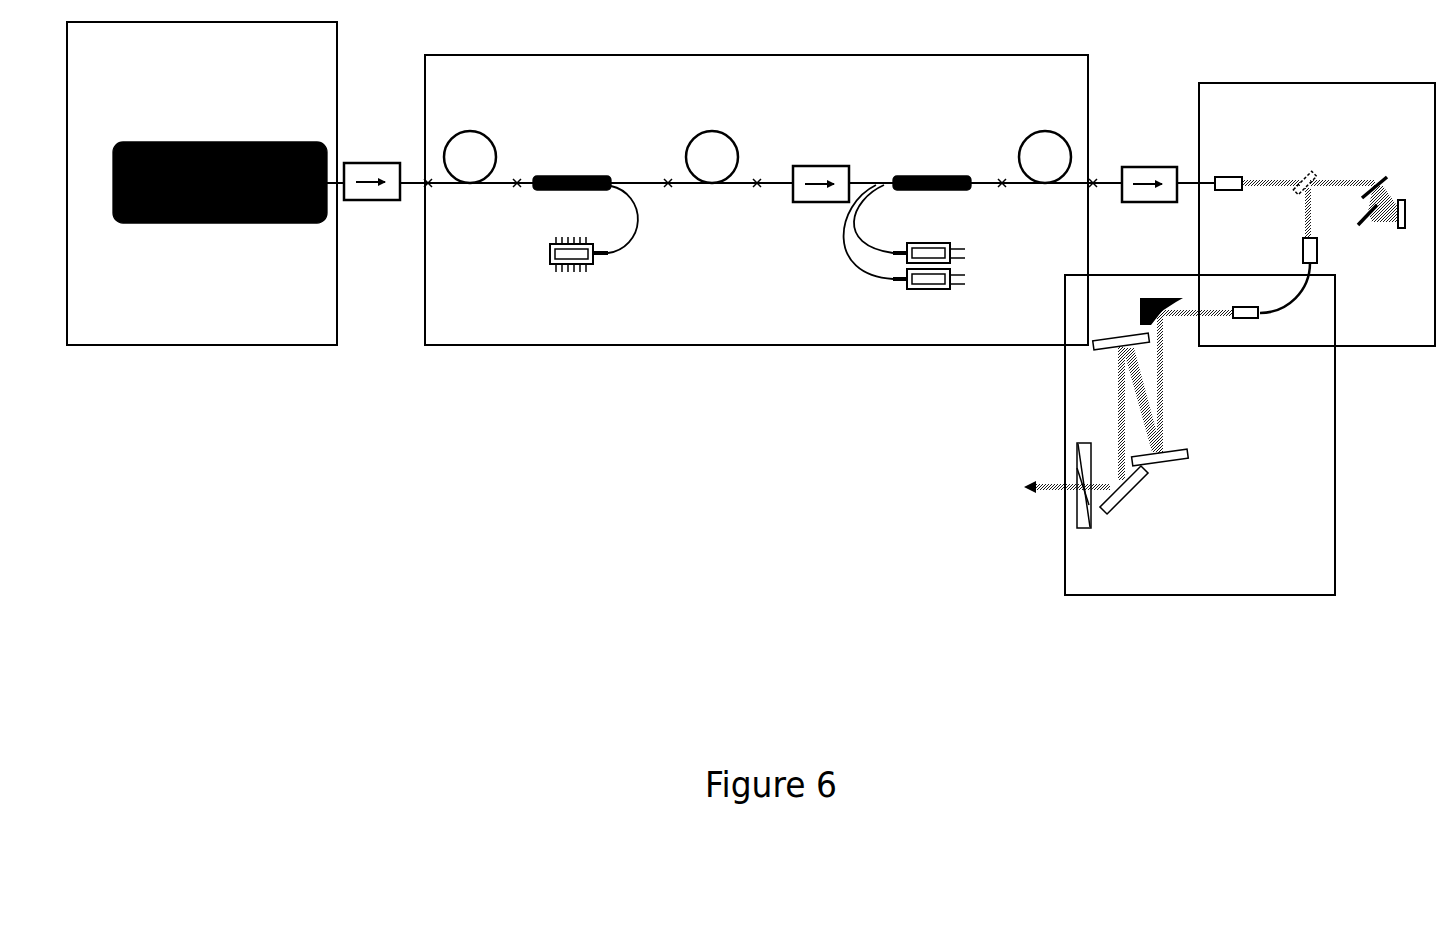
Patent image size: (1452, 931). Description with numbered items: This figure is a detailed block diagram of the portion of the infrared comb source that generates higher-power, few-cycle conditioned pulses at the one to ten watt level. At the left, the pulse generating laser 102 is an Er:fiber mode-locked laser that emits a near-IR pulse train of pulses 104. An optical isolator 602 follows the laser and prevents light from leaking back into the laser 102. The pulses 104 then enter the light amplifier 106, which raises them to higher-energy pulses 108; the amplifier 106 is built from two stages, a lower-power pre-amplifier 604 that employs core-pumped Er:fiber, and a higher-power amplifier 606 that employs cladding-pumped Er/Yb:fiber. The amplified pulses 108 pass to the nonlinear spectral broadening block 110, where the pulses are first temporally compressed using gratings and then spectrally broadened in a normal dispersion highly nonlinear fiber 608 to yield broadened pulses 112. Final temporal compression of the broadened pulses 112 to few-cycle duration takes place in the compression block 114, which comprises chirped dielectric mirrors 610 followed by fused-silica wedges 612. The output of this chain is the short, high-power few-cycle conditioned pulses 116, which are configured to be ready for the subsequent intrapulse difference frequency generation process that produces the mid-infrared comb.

The mode-locked pulse generation laser 102 is at (202, 183).
The near-IR pulses 104 is at (374, 164).
The amplifier 106 is at (756, 200).
The higher-energy pulses 108 is at (1146, 154).
The nonlinear element 110 is at (1317, 214).
The broadened pulses 112 is at (1232, 325).
The temporal compression block 114 is at (1154, 435).
The few-cycle conditioned pulses 116 is at (1041, 486).
The optical isolator 602 is at (372, 199).
The pre-amplifier 604 is at (588, 137).
The higher-power amplifier 606 is at (940, 143).
The normal dispersion highly nonlinear fiber 608 is at (1289, 298).
The chirped dielectric mirrors 610 is at (1220, 425).
The fused-silica wedges 612 is at (1096, 504).